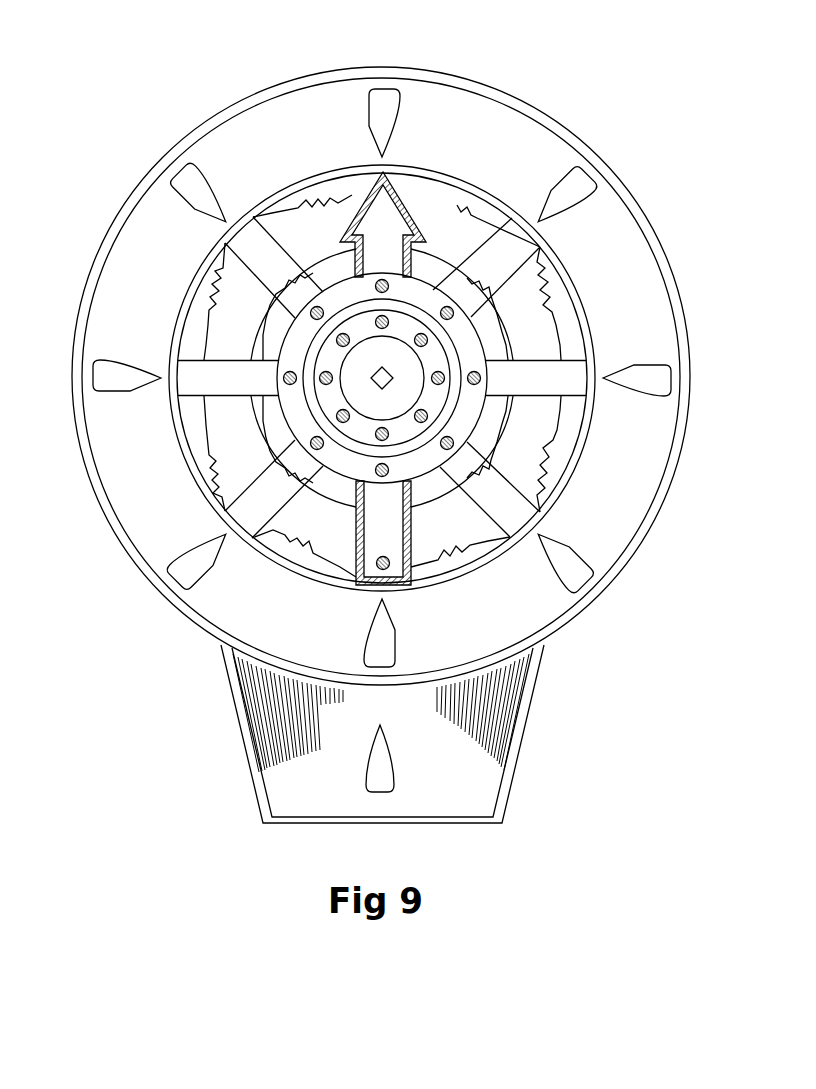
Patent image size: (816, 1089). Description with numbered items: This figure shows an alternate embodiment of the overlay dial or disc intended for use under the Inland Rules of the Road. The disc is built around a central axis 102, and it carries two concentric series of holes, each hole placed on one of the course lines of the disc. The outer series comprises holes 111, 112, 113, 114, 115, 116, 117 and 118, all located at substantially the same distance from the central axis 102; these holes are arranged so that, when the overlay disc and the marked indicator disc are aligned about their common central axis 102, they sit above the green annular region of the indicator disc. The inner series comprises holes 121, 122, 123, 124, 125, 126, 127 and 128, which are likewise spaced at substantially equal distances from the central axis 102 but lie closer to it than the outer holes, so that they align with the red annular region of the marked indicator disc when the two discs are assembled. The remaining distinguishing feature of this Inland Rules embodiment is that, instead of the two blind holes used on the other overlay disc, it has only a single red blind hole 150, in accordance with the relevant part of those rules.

The central axis 102 is at (378, 367).
The hole 111 is at (454, 312).
The hole 112 is at (481, 377).
The hole 113 is at (454, 441).
The hole 114 is at (389, 472).
The hole 115 is at (311, 445).
The hole 116 is at (284, 375).
The hole 117 is at (311, 309).
The hole 118 is at (389, 285).
The hole 121 is at (428, 340).
The hole 122 is at (444, 382).
The hole 123 is at (445, 490).
The hole 124 is at (354, 505).
The hole 125 is at (337, 418).
The hole 126 is at (321, 375).
The hole 127 is at (341, 334).
The hole 128 is at (387, 316).
The red blind hole 150 is at (388, 569).